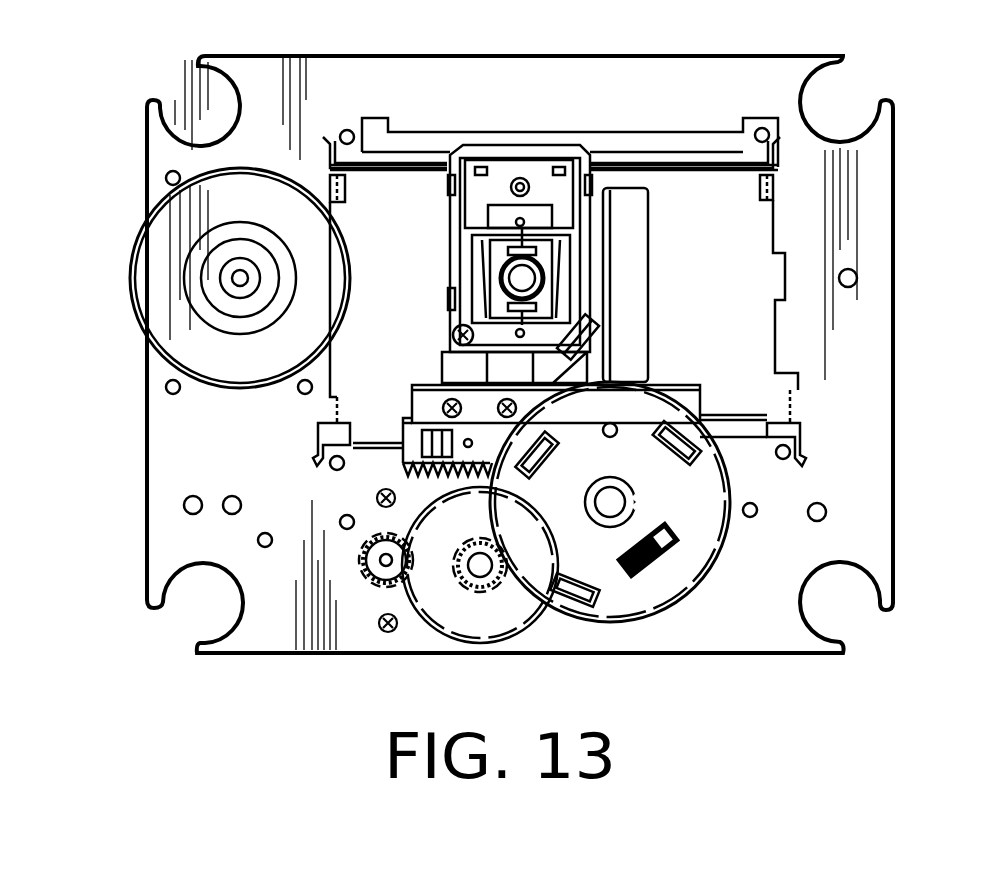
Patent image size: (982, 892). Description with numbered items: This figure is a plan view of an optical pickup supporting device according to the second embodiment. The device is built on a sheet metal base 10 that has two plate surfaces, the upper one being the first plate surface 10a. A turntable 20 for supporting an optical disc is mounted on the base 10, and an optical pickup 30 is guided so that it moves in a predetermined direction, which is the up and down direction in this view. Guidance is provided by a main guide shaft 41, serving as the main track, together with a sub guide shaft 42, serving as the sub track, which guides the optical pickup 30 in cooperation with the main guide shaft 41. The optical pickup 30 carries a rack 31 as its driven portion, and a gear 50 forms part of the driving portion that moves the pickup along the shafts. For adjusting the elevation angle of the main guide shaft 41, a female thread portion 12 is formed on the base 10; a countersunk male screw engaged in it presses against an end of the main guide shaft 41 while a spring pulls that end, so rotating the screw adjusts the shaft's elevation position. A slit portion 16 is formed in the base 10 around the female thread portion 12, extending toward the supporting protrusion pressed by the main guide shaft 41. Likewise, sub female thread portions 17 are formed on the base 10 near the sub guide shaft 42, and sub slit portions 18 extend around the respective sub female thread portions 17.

The sheet metal base 10 is at (268, 618).
The first plate surface 10a is at (347, 620).
The female thread portion 12 is at (330, 466).
The slit portion 16 is at (323, 458).
The sub female thread portion 17 is at (347, 130).
The sub slit portion 18 is at (322, 136).
The turntable 20 is at (150, 250).
The optical pickup 30 is at (472, 230).
The rack 31 is at (483, 440).
The main guide shaft 41 is at (379, 432).
The sub guide shaft 42 is at (408, 155).
The gear 50 is at (662, 588).